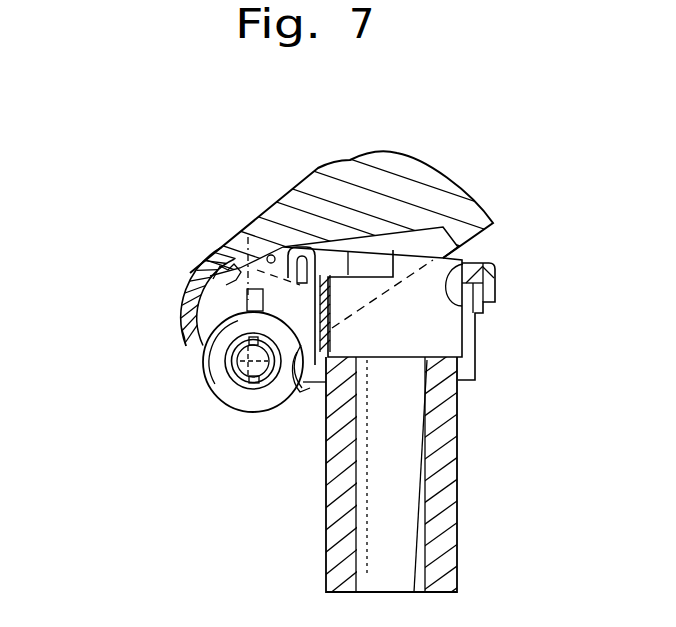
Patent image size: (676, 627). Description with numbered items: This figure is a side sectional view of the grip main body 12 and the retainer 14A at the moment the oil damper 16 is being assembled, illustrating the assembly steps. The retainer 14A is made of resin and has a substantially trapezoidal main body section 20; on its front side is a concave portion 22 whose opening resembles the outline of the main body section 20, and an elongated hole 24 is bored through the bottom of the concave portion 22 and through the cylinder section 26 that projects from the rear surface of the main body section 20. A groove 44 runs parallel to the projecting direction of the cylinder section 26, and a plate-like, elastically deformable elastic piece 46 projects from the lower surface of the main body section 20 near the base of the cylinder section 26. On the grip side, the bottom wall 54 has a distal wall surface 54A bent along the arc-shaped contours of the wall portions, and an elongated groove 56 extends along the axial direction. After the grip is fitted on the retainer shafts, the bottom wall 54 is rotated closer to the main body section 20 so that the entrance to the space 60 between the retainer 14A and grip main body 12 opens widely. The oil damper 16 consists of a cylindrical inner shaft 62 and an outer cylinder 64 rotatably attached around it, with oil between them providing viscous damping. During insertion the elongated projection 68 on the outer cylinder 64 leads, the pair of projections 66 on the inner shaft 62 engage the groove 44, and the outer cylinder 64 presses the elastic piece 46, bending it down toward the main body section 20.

The grip main body 12 is at (318, 168).
The retainer 14A is at (499, 384).
The oil damper 16 is at (203, 383).
The main body section 20 is at (490, 278).
The concave portion 22 is at (463, 265).
The elongated hole 24 is at (422, 492).
The cylinder section 26 is at (444, 543).
The groove 44 is at (251, 226).
The elastic piece 46 is at (297, 392).
The bottom wall 54 is at (250, 236).
The wall surface 54A is at (184, 283).
The elongated groove 56 is at (209, 278).
The space 60 is at (284, 314).
The inner shaft 62 is at (268, 387).
The outer cylinder 64 is at (212, 398).
The projections 66 is at (249, 385).
The elongated projection 68 is at (184, 333).